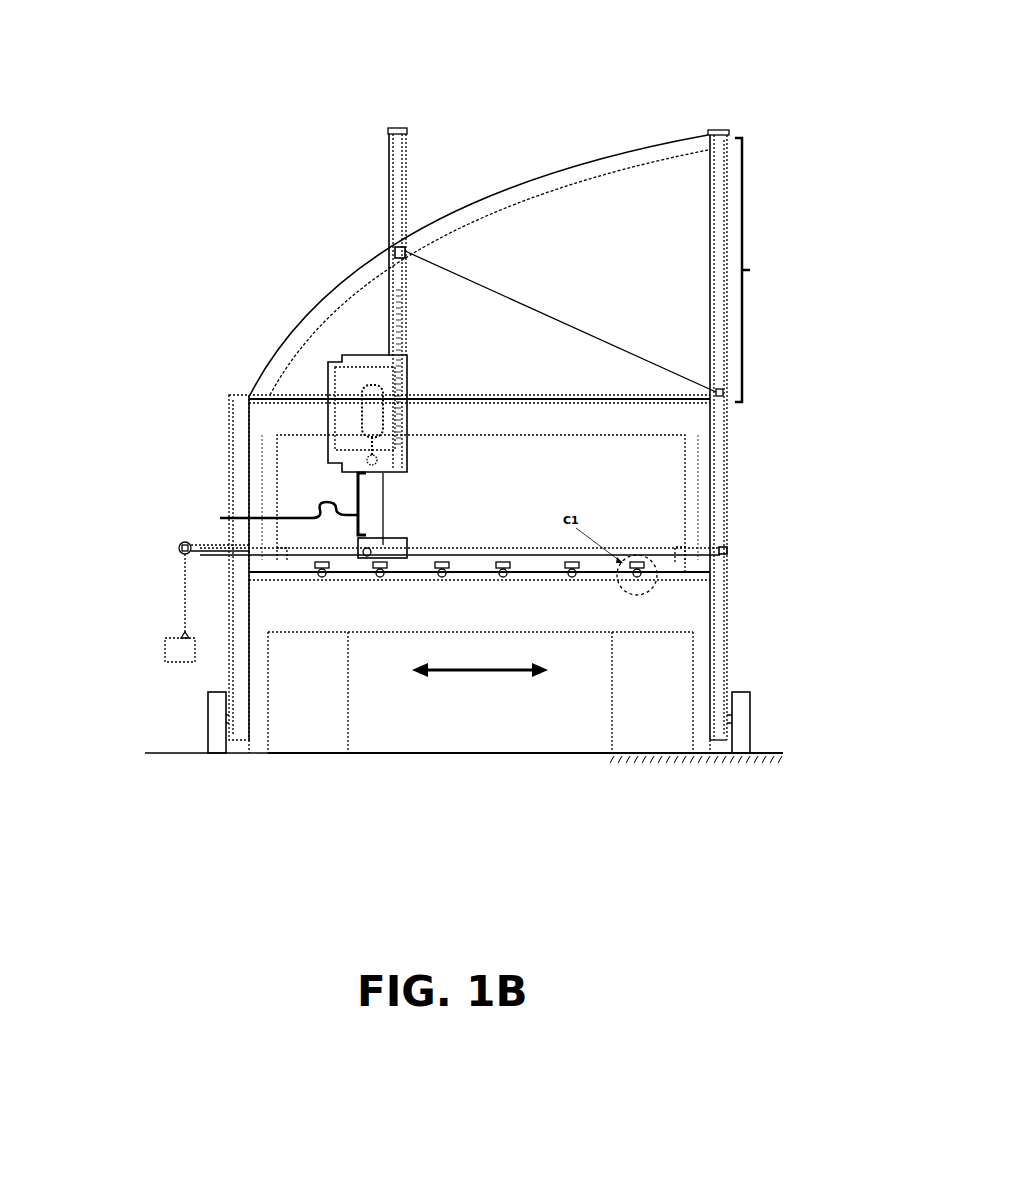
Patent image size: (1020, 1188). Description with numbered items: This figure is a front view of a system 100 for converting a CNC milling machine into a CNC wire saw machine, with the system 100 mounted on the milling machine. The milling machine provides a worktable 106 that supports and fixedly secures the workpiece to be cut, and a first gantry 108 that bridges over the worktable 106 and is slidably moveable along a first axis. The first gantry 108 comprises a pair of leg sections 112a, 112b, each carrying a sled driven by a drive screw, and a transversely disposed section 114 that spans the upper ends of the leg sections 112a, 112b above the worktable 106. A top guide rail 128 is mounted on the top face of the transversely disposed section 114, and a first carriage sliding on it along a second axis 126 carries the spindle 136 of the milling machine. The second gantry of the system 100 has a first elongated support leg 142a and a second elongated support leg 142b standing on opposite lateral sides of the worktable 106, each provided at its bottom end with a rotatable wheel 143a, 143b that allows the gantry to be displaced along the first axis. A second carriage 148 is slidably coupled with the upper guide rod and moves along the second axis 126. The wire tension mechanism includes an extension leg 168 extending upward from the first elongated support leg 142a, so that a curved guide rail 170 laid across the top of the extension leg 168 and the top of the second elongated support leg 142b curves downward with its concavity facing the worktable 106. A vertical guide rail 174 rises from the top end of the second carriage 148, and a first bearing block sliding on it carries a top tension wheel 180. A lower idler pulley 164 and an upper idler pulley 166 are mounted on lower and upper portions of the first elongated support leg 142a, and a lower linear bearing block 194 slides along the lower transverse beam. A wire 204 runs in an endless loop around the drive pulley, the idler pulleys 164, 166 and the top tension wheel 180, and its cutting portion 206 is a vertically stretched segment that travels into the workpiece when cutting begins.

The system 100 is at (716, 97).
The worktable 106 is at (710, 593).
The first gantry 108 is at (237, 420).
The leg section 112a is at (700, 478).
The leg section 112b is at (263, 480).
The transversely disposed section 114 is at (457, 435).
The second axis 126 is at (473, 674).
The top guide rail 128 is at (488, 393).
The spindle 136 is at (311, 357).
The first elongated support leg 142a is at (725, 427).
The second elongated support leg 142b is at (233, 485).
The rotatable wheel 143a is at (750, 722).
The rotatable wheel 143b is at (208, 712).
The second carriage 148 is at (253, 405).
The lower idler pulley 164 is at (723, 550).
The upper idler pulley 166 is at (723, 392).
The extension leg 168 is at (764, 435).
The curved guide rail 170 is at (570, 175).
The vertical guide rail 174 is at (390, 163).
The top tension wheel 180 is at (395, 251).
The lower linear bearing block 194 is at (393, 543).
The wire 204 is at (577, 325).
The cutting portion 206 is at (275, 509).